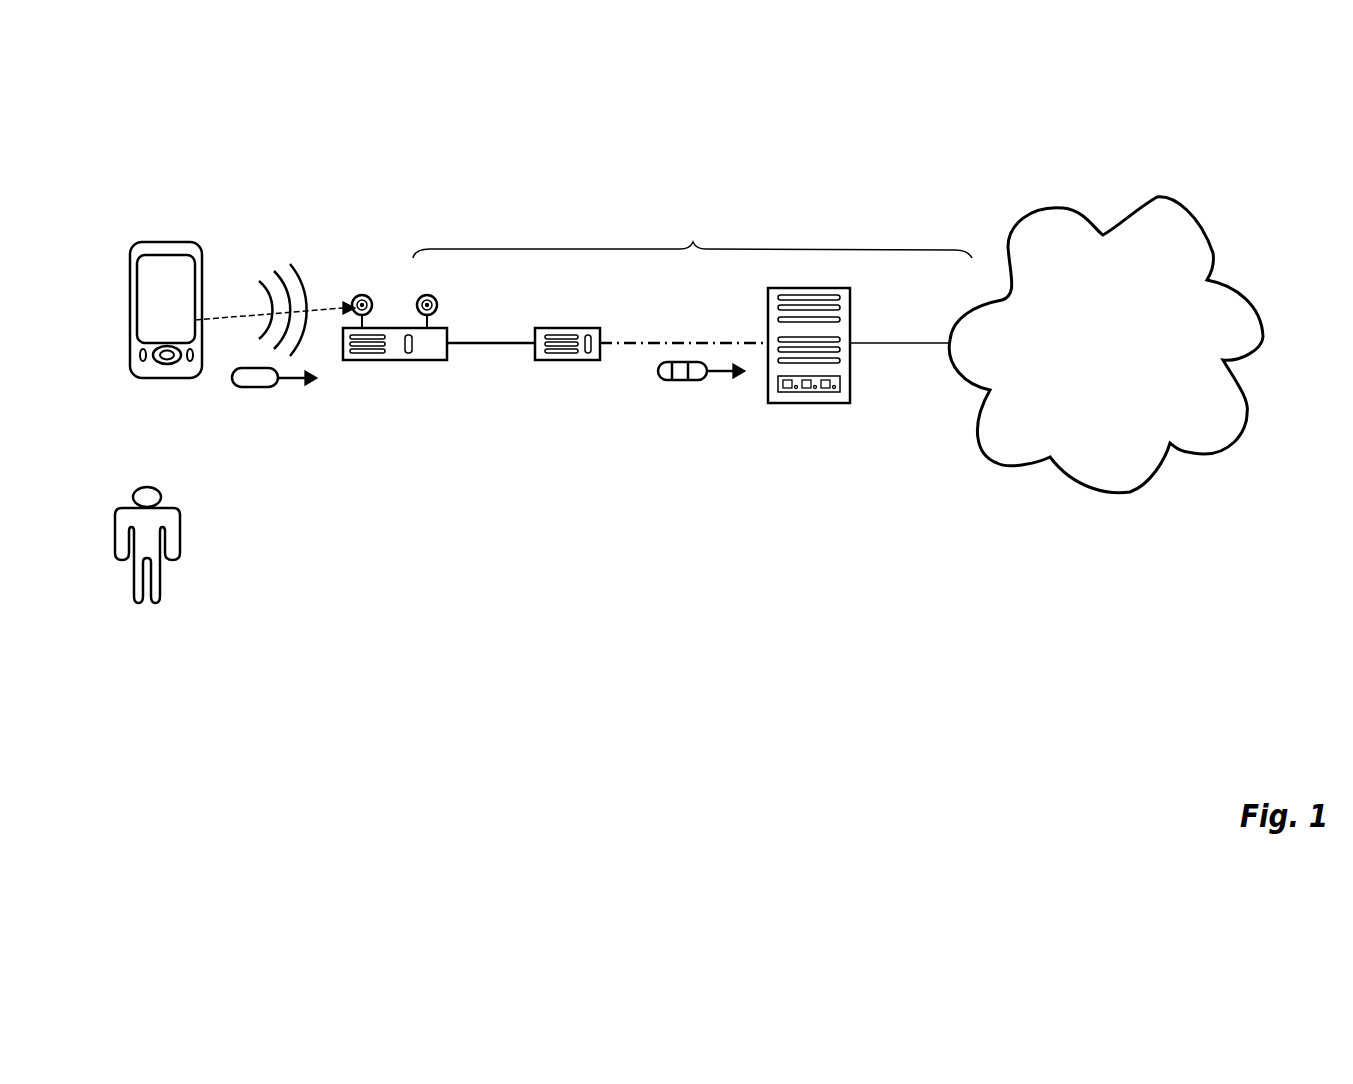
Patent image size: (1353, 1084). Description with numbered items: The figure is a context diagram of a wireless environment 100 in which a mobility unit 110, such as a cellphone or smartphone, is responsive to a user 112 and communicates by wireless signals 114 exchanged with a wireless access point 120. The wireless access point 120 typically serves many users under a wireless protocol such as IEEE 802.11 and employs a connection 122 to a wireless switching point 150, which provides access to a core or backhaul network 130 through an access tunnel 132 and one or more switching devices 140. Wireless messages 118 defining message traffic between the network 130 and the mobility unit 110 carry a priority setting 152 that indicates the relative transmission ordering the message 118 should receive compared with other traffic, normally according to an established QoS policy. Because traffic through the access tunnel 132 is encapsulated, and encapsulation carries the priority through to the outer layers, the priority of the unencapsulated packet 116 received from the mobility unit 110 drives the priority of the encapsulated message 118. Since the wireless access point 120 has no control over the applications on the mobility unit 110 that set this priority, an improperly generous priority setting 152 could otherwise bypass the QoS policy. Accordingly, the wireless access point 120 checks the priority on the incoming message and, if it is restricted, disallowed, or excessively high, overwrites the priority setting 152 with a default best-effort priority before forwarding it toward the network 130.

The wireless environment 100 is at (700, 553).
The mobility unit 110 is at (148, 378).
The user 112 is at (147, 603).
The signals 114 is at (297, 280).
The unencapsulated packet 116 is at (263, 388).
The wireless messages 118 is at (686, 418).
The wireless access point 120 is at (393, 360).
The connection 122 is at (693, 242).
The core or backhaul network 130 is at (1103, 493).
The access tunnel 132 is at (717, 343).
The switching devices 140 is at (568, 360).
The wireless switching point 150 is at (808, 403).
The priority setting 152 is at (678, 381).